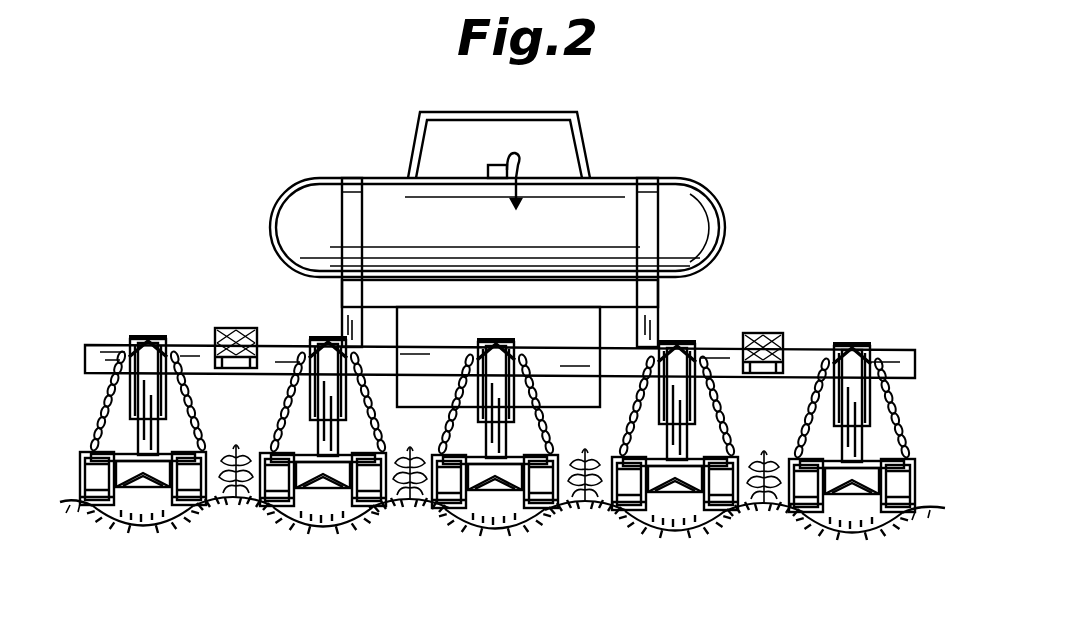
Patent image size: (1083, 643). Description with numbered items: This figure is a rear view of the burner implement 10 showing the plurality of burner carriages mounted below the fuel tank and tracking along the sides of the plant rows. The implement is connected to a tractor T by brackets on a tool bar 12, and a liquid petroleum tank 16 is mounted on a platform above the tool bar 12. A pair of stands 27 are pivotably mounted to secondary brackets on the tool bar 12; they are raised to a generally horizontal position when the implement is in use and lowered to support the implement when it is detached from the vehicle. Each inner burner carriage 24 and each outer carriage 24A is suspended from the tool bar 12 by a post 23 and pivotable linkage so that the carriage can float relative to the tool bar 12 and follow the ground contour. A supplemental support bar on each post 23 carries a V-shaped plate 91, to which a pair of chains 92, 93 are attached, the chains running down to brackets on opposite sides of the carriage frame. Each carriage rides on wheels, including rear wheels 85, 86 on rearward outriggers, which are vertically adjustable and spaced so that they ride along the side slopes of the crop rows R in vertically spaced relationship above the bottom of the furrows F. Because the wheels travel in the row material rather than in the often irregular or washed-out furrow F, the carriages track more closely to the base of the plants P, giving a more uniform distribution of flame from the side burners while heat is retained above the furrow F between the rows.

The tractor T is at (420, 124).
The liquid petroleum tank 16 is at (690, 207).
The burner implement 10 is at (196, 318).
The tool bar 12 is at (114, 344).
The stands 27 is at (762, 336).
The V-shaped plate 91 is at (838, 346).
The post 23 is at (150, 398).
The chain 92 is at (803, 404).
The chain 93 is at (900, 354).
The burner carriage 24 is at (330, 506).
The rear wheel 85 is at (628, 516).
The rear wheel 86 is at (736, 506).
The plants P is at (252, 424).
The furrow F is at (680, 541).
The crop row R is at (567, 518).
The outer carriage 24A is at (98, 531).